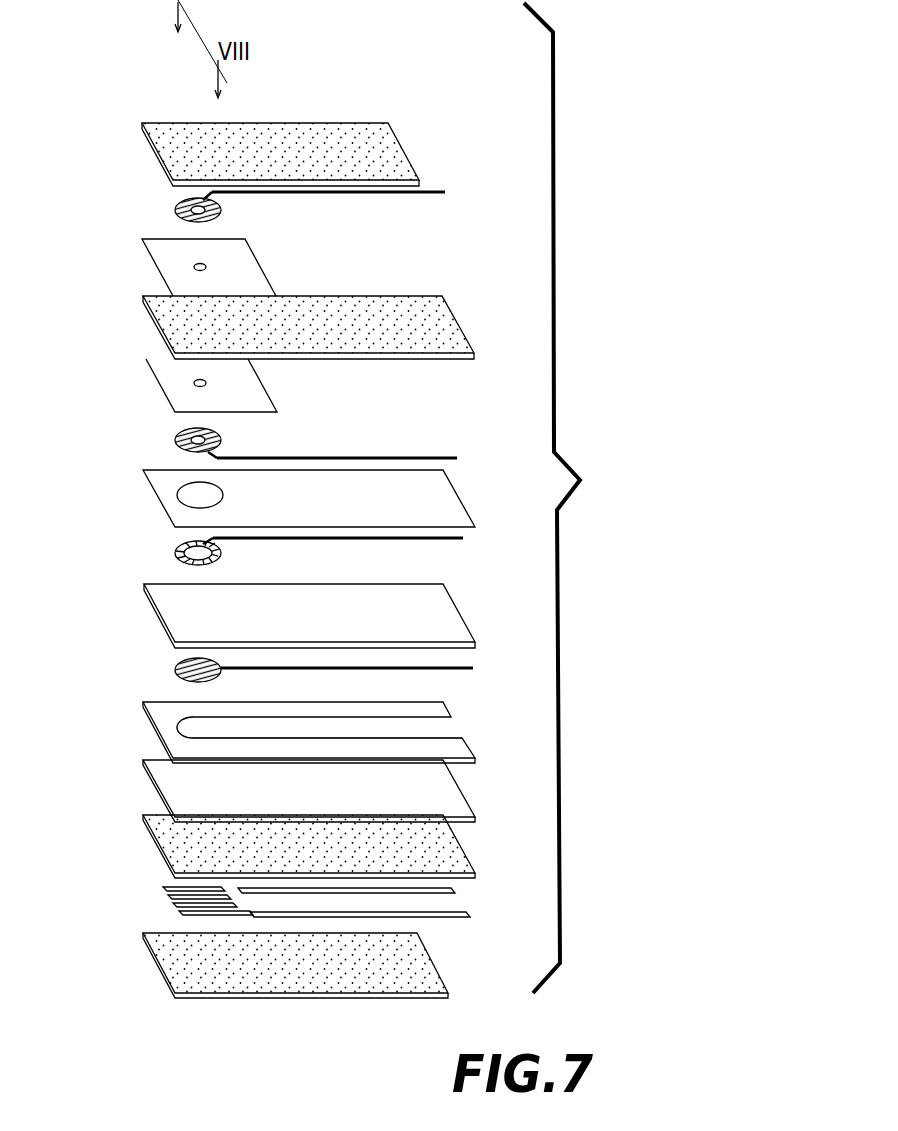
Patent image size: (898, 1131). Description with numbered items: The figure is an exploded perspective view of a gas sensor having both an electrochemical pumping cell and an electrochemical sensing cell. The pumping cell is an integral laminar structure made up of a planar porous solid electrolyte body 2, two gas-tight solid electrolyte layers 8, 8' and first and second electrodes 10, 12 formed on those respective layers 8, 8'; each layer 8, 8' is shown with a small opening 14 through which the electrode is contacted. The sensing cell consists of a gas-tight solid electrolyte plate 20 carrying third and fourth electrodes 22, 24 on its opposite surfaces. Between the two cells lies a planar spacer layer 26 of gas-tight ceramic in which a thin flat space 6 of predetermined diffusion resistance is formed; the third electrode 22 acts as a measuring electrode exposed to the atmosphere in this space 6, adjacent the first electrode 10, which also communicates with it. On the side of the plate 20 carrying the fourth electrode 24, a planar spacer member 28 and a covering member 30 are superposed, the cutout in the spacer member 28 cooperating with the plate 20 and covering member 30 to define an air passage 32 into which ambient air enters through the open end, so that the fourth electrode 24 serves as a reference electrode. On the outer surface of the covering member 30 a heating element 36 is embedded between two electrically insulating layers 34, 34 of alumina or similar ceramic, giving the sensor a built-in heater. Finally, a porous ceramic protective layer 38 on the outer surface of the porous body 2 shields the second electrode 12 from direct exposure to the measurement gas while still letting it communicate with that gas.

The planar porous solid electrolyte body 2 is at (443, 319).
The thin flat space 6 is at (192, 497).
The gas-tight solid electrolyte layer 8 is at (187, 387).
The gas-tight solid electrolyte layer 8' is at (181, 267).
The first electrode 10 is at (176, 444).
The second electrode 12 is at (177, 204).
The contact hole 14 is at (196, 264).
The gas-tight solid electrolyte plate 20 is at (452, 617).
The third electrode 22 is at (176, 551).
The fourth electrode 24 is at (180, 664).
The planar spacer layer 26 is at (447, 501).
The planar spacer member 28 is at (170, 705).
The covering member 30 is at (168, 777).
The air passage 32 is at (433, 733).
The electrically insulating layer 34 is at (452, 856).
The heating element 36 is at (152, 905).
The porous ceramic protective layer 38 is at (382, 156).